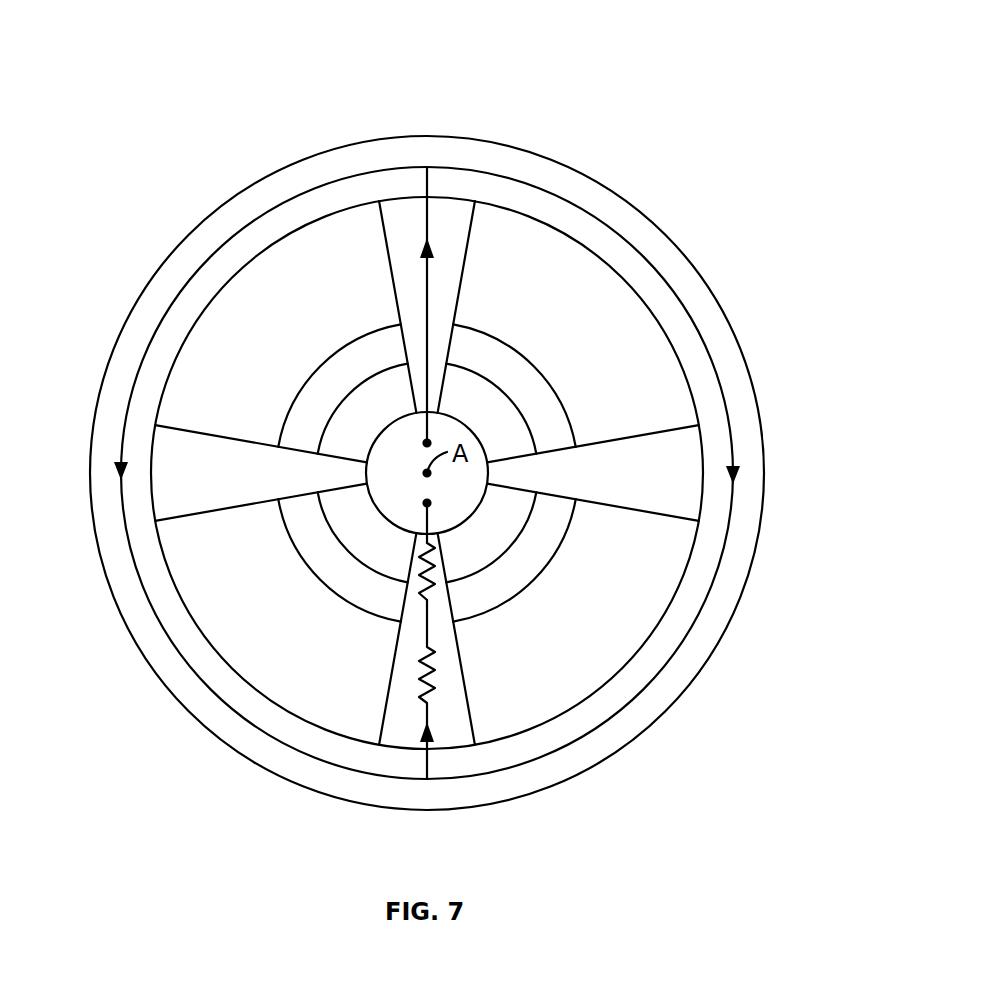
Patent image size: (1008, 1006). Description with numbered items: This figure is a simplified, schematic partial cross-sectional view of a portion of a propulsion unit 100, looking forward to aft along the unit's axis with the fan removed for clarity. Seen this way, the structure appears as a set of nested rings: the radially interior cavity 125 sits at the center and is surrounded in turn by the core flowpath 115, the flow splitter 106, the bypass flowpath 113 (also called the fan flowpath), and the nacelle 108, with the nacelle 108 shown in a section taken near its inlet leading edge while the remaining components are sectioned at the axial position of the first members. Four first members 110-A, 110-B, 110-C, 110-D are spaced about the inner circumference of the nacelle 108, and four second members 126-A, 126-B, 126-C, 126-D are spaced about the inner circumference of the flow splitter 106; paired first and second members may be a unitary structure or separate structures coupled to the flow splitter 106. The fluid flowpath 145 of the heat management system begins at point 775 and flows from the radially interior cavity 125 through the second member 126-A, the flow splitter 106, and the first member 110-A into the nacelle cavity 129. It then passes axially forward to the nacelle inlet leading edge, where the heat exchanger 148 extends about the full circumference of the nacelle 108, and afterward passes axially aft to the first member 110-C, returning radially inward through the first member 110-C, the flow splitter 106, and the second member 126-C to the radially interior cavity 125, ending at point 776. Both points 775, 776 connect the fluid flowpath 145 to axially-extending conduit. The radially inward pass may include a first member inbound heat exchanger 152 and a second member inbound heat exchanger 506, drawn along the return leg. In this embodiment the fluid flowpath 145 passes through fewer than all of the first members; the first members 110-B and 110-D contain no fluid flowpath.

The propulsion unit 100 is at (150, 56).
The flow splitter 106 is at (557, 388).
The nacelle 108 is at (753, 382).
The first member 110-A is at (463, 275).
The first member 110-B is at (660, 428).
The first member 110-C is at (467, 697).
The first member 110-D is at (195, 430).
The bypass flowpath 113 is at (650, 613).
The core flowpath 115 is at (521, 433).
The radially interior cavity 125 is at (416, 517).
The second member 126-A is at (443, 397).
The second member 126-B is at (540, 493).
The second member 126-C is at (445, 552).
The second member 126-D is at (277, 440).
The nacelle cavity 129 is at (714, 340).
The fluid flowpath 145 is at (420, 270).
The heat exchanger 148 is at (680, 297).
The first member inbound heat exchanger 152 is at (414, 687).
The second member inbound heat exchanger 506 is at (414, 570).
The point 775 is at (425, 442).
The point 776 is at (425, 503).